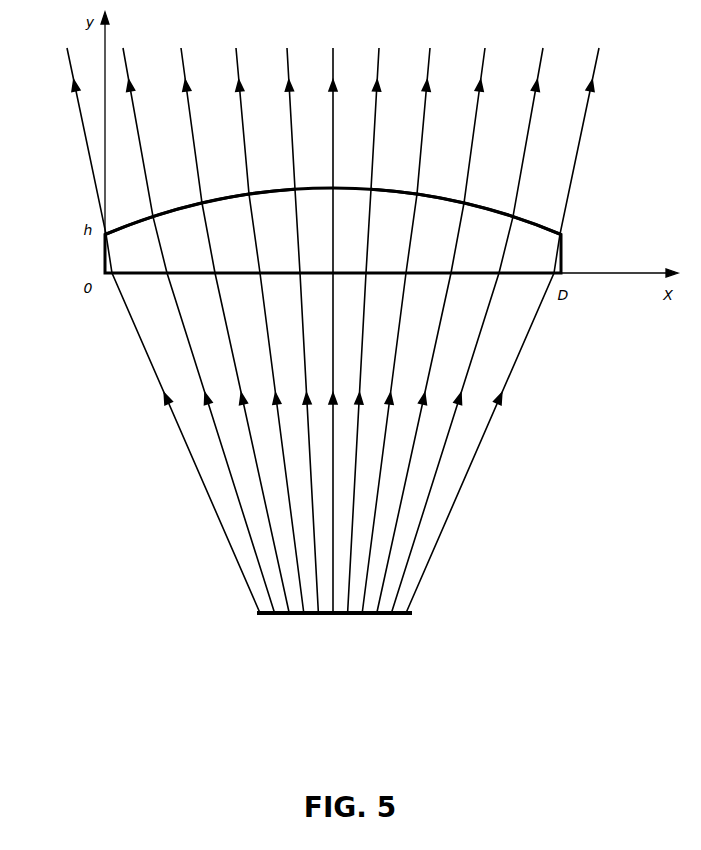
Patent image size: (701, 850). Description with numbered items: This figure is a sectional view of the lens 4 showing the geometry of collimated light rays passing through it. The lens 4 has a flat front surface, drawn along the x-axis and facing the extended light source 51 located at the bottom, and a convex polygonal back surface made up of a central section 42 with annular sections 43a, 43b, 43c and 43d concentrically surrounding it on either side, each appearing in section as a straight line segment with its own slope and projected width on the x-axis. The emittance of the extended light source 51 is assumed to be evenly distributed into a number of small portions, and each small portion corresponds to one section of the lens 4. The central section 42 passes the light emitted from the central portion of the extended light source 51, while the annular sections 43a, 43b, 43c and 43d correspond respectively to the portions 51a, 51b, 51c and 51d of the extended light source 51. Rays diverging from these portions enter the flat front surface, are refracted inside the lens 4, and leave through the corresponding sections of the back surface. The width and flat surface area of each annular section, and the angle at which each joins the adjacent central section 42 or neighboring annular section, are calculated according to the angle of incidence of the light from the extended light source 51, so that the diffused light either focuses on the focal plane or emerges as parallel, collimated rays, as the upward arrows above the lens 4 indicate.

The lens 4 is at (94, 255).
The central section 42 is at (296, 185).
The annular section 43a is at (107, 229).
The annular section 43b is at (154, 212).
The annular section 43c is at (203, 199).
The annular section 43d is at (250, 190).
The extended light source 51 is at (317, 640).
The portion of the extended light source 51a is at (275, 623).
The portion of the extended light source 51b is at (275, 623).
The portion of the extended light source 51c is at (289, 623).
The portion of the extended light source 51d is at (304, 623).